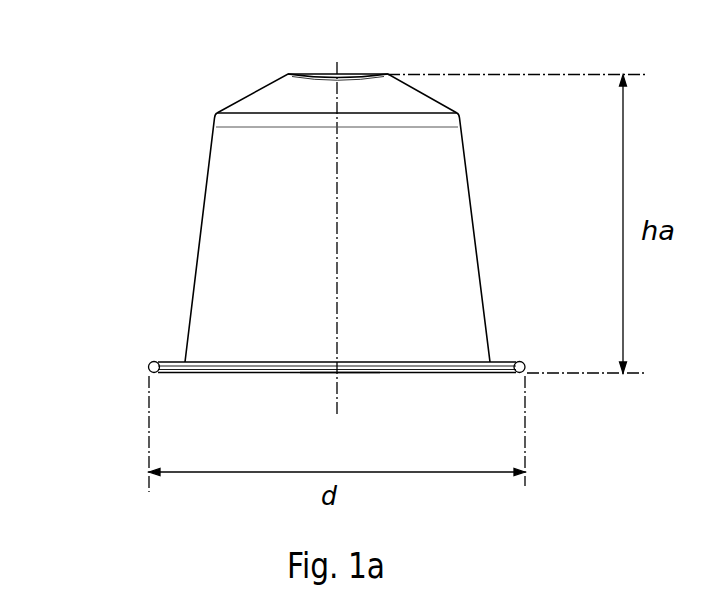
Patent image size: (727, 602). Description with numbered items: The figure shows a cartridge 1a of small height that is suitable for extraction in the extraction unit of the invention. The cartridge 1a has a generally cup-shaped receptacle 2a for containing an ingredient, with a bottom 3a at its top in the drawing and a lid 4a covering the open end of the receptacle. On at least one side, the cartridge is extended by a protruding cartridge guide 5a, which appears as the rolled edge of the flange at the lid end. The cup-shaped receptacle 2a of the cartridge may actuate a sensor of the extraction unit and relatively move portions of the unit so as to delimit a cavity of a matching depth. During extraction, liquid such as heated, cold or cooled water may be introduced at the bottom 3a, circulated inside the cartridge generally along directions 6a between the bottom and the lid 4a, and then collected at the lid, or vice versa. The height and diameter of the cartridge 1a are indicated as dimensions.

The cartridge 1a is at (122, 153).
The cup-shaped receptacle 2a is at (437, 227).
The bottom 3a is at (280, 98).
The lid 4a is at (290, 373).
The protruding cartridge guide 5a is at (150, 366).
The directions 6a is at (338, 388).